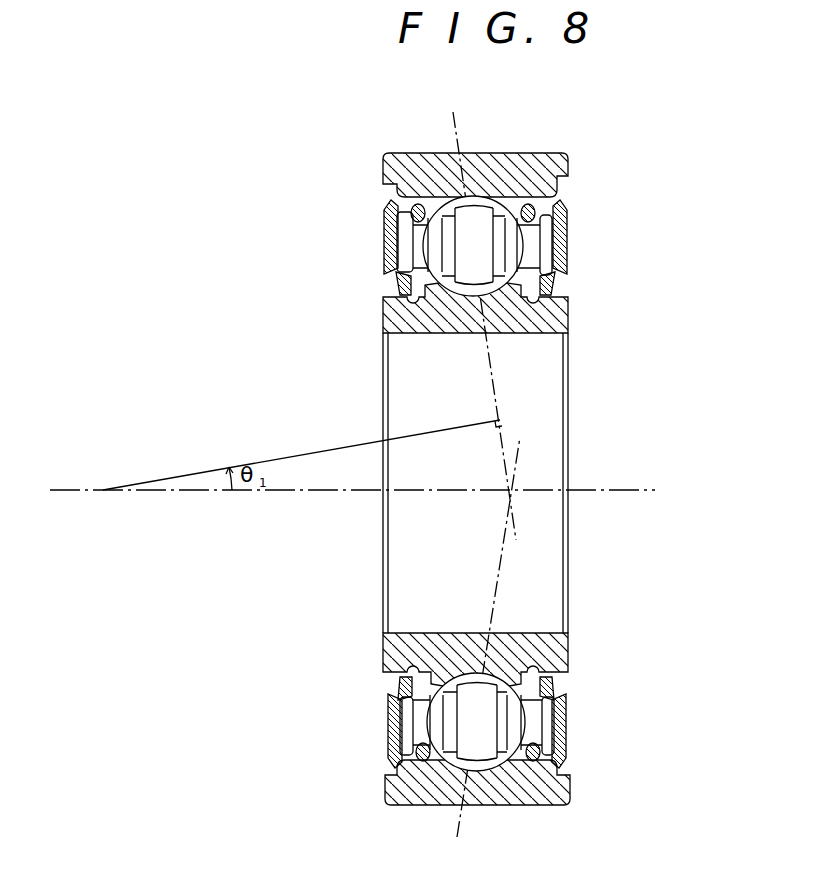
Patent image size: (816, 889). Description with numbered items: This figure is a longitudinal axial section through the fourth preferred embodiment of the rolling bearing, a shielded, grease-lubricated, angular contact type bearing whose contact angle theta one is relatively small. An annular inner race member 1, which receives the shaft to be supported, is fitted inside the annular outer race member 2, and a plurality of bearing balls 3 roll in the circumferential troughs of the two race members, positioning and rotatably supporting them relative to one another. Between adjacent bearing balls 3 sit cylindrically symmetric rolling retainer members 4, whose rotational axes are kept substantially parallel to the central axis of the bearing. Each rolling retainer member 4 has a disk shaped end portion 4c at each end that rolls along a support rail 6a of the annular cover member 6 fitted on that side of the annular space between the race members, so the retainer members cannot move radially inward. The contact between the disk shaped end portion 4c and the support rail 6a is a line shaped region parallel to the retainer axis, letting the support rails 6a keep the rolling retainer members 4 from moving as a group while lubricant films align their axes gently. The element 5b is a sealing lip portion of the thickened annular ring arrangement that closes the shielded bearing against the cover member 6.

The inner race member 1 is at (388, 318).
The outer race member 2 is at (543, 155).
The bearing balls 3 is at (478, 200).
The rolling retainer member 4 is at (462, 243).
The disk shaped end portion 4c is at (398, 230).
The seal lip 5b is at (408, 200).
The annular cover member 6 is at (386, 214).
The support rail 6a is at (398, 283).